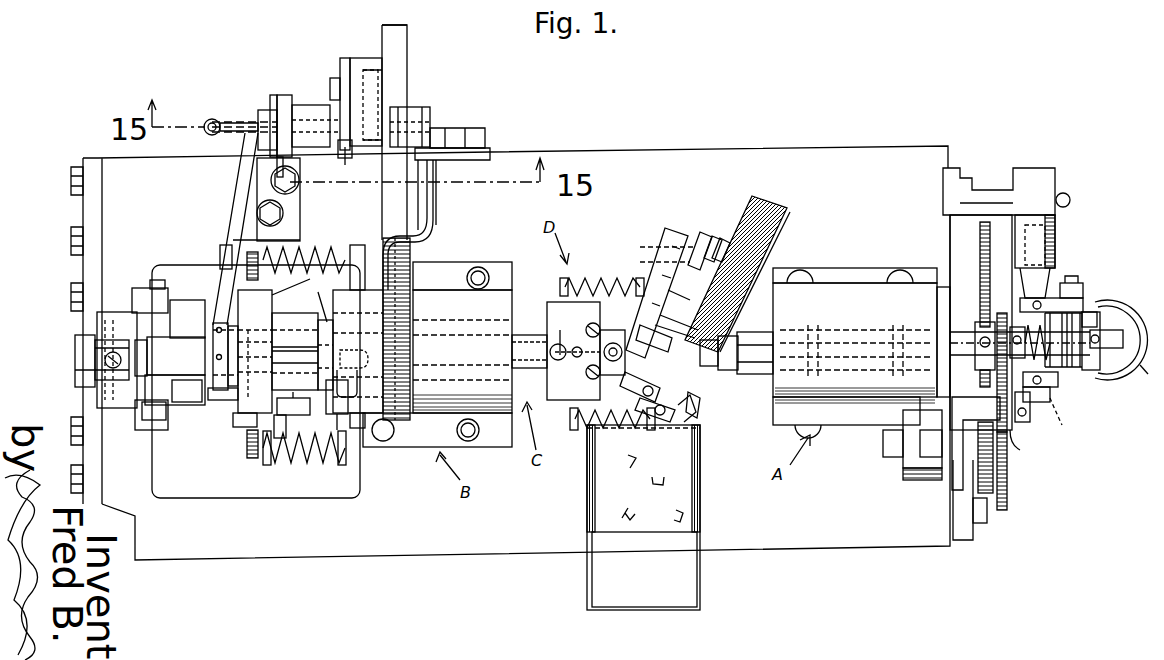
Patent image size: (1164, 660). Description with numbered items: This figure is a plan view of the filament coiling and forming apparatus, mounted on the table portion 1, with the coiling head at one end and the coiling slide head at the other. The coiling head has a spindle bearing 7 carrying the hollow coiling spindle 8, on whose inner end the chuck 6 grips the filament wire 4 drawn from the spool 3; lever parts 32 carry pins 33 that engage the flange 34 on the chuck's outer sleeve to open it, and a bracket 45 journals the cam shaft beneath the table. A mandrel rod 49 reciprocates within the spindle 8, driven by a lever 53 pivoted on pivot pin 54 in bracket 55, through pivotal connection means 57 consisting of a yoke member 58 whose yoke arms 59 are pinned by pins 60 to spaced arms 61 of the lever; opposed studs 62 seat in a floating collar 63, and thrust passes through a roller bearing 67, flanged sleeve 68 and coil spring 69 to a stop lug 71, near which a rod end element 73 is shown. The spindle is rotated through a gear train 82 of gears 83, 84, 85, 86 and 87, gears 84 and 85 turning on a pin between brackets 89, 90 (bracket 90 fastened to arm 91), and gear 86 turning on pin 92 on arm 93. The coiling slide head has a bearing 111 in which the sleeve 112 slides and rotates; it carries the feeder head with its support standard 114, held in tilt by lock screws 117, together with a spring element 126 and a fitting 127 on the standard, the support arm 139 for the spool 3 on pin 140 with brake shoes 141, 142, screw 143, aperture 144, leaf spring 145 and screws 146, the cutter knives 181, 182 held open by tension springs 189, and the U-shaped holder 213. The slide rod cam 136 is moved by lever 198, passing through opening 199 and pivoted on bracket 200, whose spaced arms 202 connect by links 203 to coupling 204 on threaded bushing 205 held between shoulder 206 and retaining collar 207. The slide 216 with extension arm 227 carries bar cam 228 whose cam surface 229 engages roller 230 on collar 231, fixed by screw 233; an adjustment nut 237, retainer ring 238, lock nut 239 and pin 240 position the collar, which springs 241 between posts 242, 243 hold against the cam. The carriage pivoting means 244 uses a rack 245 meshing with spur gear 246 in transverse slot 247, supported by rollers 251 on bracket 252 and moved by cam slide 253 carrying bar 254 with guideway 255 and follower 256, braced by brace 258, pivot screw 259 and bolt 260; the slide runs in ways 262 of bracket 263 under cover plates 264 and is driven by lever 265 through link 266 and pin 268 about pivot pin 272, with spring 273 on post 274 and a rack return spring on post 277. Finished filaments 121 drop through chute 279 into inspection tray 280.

The table portion 1 is at (529, 546).
The spool or reel 3 is at (785, 218).
The filament wire 4 is at (768, 200).
The filament wire gripper or chuck 6 is at (700, 404).
The spindle bearing or housing 7 is at (858, 425).
The hollow coiling spindle 8 is at (852, 330).
The shaft collar 32 is at (740, 375).
The pins or studs 33 is at (755, 375).
The flange 34 is at (726, 370).
The bearing bracket 45 is at (97, 325).
The mandrel rod 49 is at (1118, 337).
The lever 53 is at (1055, 270).
The pivot pin 54 is at (1052, 236).
The bracket 55 is at (990, 190).
The pivotal connection means 57 is at (1104, 283).
The yoke member 58 is at (1145, 376).
The yoke arms 59 is at (1082, 315).
The pins 60 is at (1050, 420).
The spaced arms 61 is at (1010, 285).
The pins or studs 62 is at (1092, 320).
The floating collar 63 is at (1098, 318).
The roller bearing 67 is at (1058, 387).
The flanged sleeve 68 is at (1053, 341).
The coil spring 69 is at (1037, 334).
The stop lug 71 is at (1014, 327).
The shaft end 73 is at (1108, 352).
The gear train 82 is at (1042, 466).
The drive gear 83 is at (980, 240).
The gear 84 is at (985, 500).
The gear 85 is at (1008, 500).
The gear 86 is at (1005, 467).
The coiling spindle gear 87 is at (1000, 313).
The bracket 89 is at (962, 540).
The bracket 90 is at (952, 460).
The arm 91 is at (910, 478).
The pin 92 is at (1028, 422).
The arm 93 is at (942, 398).
The bearing or housing 111 is at (455, 262).
The carriage-supporting sleeve or spindle 112 is at (520, 334).
The support standard 114 is at (548, 302).
The lock screws 117 is at (547, 352).
The filament 121 is at (628, 515).
The spring 126 is at (588, 278).
The pin 127 is at (572, 350).
The slide rod cam 136 is at (210, 420).
The support arm or bracket 139 is at (675, 228).
The pin 140 is at (655, 245).
The shoe 141 is at (676, 319).
The shoe 142 is at (702, 232).
The screw 143 is at (650, 262).
The aperture 144 is at (668, 292).
The leaf spring 145 is at (726, 240).
The screws 146 is at (714, 236).
The cutter knife 181 is at (659, 407).
The cutter knife 182 is at (642, 326).
The tension coil springs 189 is at (612, 278).
The lever 198 is at (168, 332).
The opening 199 is at (200, 492).
The bracket 200 is at (178, 408).
The spaced arms 202 is at (170, 293).
The links 203 is at (135, 292).
The collar or coupling 204 is at (95, 372).
The threaded sleeve or bushing 205 is at (148, 356).
The shoulder 206 is at (165, 342).
The retaining collar 207 is at (75, 350).
The U-shaped holder 213 is at (640, 386).
The slide 216 is at (327, 346).
The side extension arm 227 is at (335, 406).
The bar or plate cam 228 is at (293, 403).
The cam surface 229 is at (282, 452).
The roller 230 is at (268, 436).
The collar or sleeve 231 is at (246, 419).
The fastening screw 233 is at (330, 462).
The adjustment nut 237 is at (223, 400).
The cover or retainer ring 238 is at (240, 310).
The lock nut 239 is at (214, 322).
The pin 240 is at (295, 350).
The tension coil springs 241 is at (335, 255).
The posts 242 is at (248, 262).
The posts 243 is at (360, 258).
The carriage pivoting means 244 is at (306, 66).
The rack 245 is at (382, 206).
The spur gear 246 is at (410, 348).
The transverse slot 247 is at (410, 370).
The rollers 251 is at (414, 110).
The bracket 252 is at (455, 145).
The slide 253 is at (308, 108).
The bar or cam 254 is at (362, 60).
The longitudinal guideway 255 is at (378, 86).
The shoe or cam follower 256 is at (378, 140).
The brace 258 is at (343, 58).
The pivot screw 259 is at (348, 160).
The bolt 260 is at (333, 78).
The ways 262 is at (282, 108).
The bracket 263 is at (265, 105).
The cover plates 264 is at (294, 100).
The lever 265 is at (236, 188).
The link 266 is at (262, 110).
The pin 268 is at (236, 136).
The pivot pin 272 is at (220, 250).
The tension coil spring 273 is at (206, 120).
The post 274 is at (226, 118).
The post 277 is at (433, 210).
The chute 279 is at (700, 414).
The inspection tray 280 is at (688, 480).